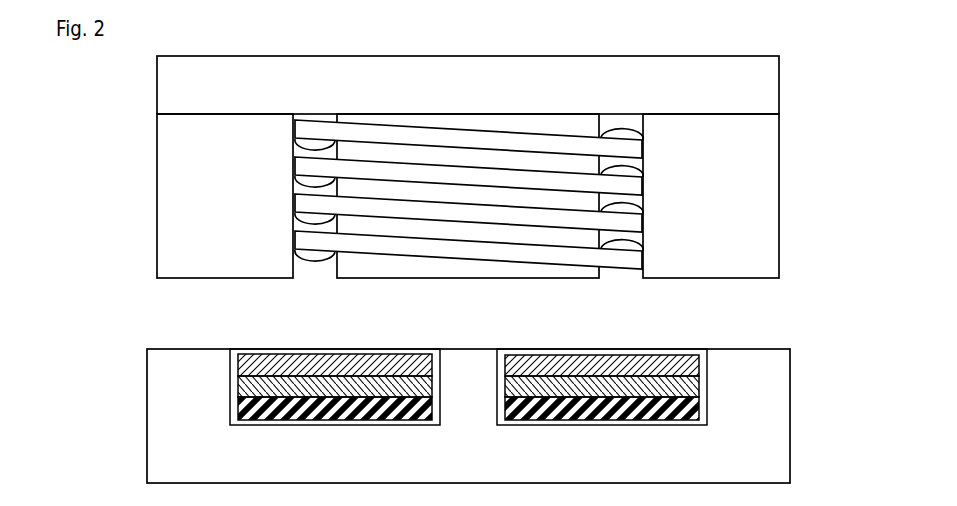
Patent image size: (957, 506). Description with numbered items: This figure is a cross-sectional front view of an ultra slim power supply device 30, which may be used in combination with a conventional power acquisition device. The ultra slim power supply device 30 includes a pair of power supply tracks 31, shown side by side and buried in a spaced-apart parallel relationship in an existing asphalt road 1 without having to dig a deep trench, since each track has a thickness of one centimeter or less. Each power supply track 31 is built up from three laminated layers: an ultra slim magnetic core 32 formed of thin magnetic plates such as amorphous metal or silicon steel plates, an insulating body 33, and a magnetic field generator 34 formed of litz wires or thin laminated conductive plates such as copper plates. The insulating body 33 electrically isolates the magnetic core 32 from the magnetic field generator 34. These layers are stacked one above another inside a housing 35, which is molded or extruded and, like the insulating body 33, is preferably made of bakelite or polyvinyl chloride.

The asphalt road 1 is at (751, 348).
The ultra slim power supply device 30 is at (450, 389).
The power supply track 31 is at (669, 360).
The magnetic core 32 is at (549, 400).
The insulating body 33 is at (599, 387).
The magnetic field generator 34 is at (648, 363).
The housing 35 is at (708, 386).